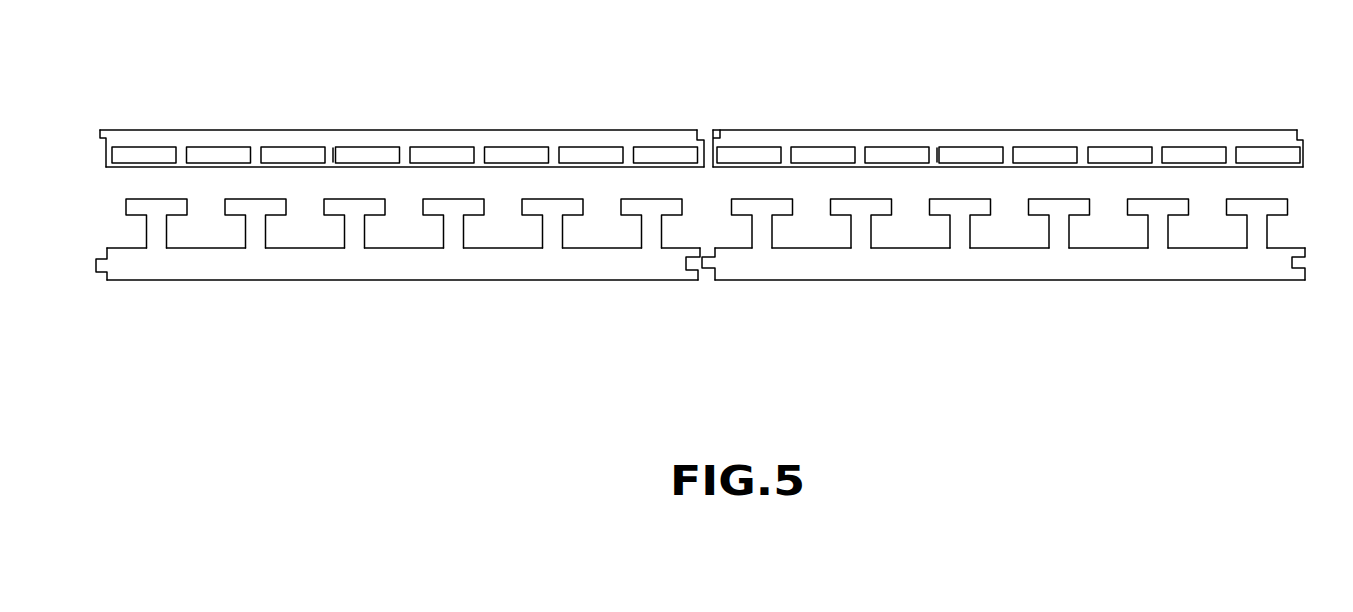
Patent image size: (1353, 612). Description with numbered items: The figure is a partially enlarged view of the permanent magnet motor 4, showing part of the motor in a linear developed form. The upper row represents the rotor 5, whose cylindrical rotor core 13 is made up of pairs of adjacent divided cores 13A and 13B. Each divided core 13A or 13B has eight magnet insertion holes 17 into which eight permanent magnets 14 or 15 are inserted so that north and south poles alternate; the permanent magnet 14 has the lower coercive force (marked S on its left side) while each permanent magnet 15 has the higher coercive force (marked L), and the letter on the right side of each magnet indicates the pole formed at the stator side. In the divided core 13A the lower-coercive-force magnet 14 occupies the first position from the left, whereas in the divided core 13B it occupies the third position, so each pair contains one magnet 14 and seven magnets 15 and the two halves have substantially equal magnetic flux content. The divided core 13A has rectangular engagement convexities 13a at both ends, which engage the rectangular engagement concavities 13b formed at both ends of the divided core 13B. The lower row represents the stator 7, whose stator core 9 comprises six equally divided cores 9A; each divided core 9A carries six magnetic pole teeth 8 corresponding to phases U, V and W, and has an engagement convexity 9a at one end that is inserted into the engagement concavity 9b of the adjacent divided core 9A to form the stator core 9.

The permanent magnet motor 4 is at (1059, 111).
The rotor 5 is at (1300, 140).
The stator 7 is at (1297, 238).
The magnetic pole teeth 8 is at (153, 199).
The stator core 9 is at (662, 300).
The divided core 9A is at (378, 283).
The engagement convexity 9a is at (97, 274).
The engagement concavity 9b is at (694, 275).
The rotor core 13 is at (595, 110).
The divided core 13A is at (444, 130).
The divided core 13B is at (1150, 130).
The engagement convexities 13a is at (98, 140).
The engagement concavities 13b is at (713, 138).
The permanent magnet 14 is at (138, 147).
The permanent magnet 15 is at (213, 147).
The magnet insertion holes 17 is at (344, 149).